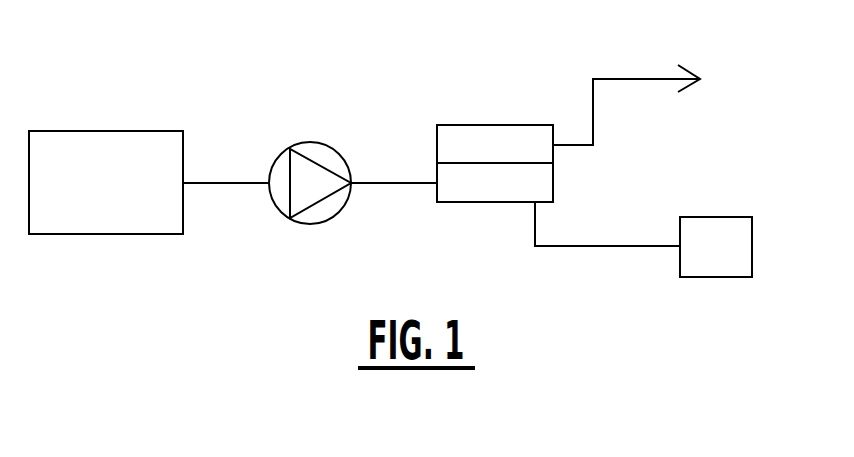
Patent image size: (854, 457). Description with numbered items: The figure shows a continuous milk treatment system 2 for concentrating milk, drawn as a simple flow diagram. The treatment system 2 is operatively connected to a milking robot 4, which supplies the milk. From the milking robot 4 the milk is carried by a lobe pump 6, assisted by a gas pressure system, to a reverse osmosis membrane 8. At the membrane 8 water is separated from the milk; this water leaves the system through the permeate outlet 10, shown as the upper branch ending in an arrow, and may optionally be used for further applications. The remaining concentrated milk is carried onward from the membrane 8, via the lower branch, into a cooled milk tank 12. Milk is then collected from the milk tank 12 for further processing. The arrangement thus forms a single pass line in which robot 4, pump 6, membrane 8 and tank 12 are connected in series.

The milk treatment system 2 is at (207, 74).
The milking robot 4 is at (75, 216).
The lobe pump 6 is at (322, 209).
The reverse osmosis membrane 8 is at (496, 136).
The permeate outlet 10 is at (636, 79).
The cooled milk tank 12 is at (736, 239).